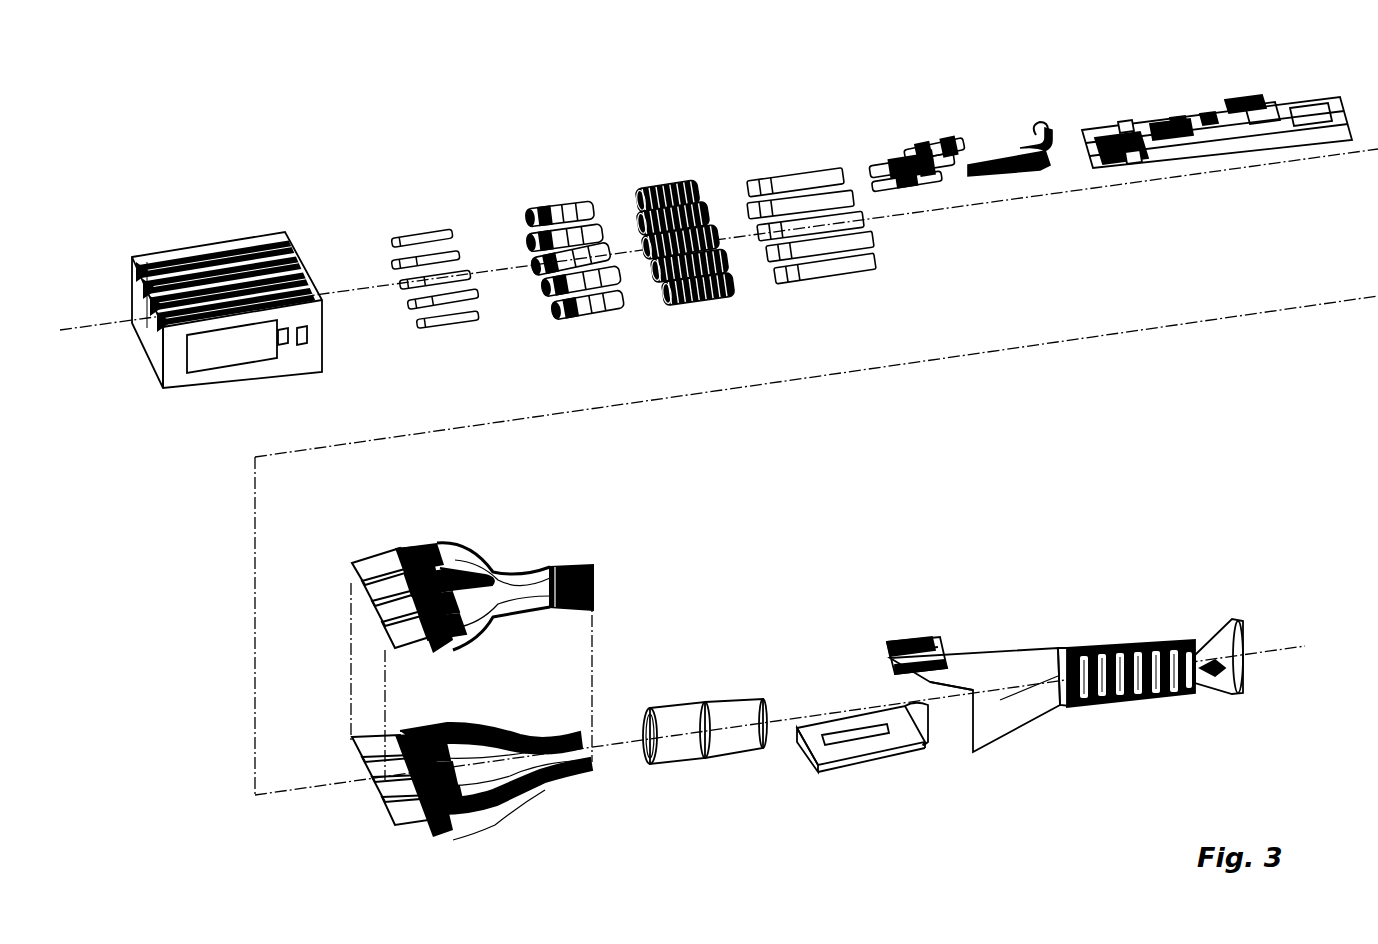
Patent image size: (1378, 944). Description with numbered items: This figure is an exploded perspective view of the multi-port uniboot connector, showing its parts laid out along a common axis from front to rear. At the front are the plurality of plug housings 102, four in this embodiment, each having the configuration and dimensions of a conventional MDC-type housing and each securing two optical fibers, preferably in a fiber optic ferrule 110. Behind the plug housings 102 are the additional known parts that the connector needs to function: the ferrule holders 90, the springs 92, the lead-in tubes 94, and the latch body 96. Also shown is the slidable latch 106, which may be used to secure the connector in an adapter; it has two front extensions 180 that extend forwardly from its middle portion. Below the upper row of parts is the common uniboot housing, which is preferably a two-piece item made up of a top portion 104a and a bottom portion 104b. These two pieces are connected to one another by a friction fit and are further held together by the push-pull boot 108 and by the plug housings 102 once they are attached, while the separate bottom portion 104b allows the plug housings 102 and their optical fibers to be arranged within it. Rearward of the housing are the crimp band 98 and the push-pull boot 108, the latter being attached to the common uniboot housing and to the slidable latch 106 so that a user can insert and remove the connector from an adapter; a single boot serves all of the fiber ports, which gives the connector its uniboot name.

The plug housings 102 is at (232, 233).
The fiber optic ferrule 110 is at (423, 231).
The ferrule holders 90 is at (561, 193).
The springs 92 is at (659, 186).
The lead-in tubes 94 is at (789, 173).
The latch body 96 is at (945, 131).
The slidable latch 106 is at (1260, 114).
The front extensions 180 is at (1123, 122).
The top portion 104a is at (452, 548).
The bottom portion 104b is at (481, 825).
The crimp band 98 is at (701, 700).
The push-pull boot 108 is at (1023, 650).